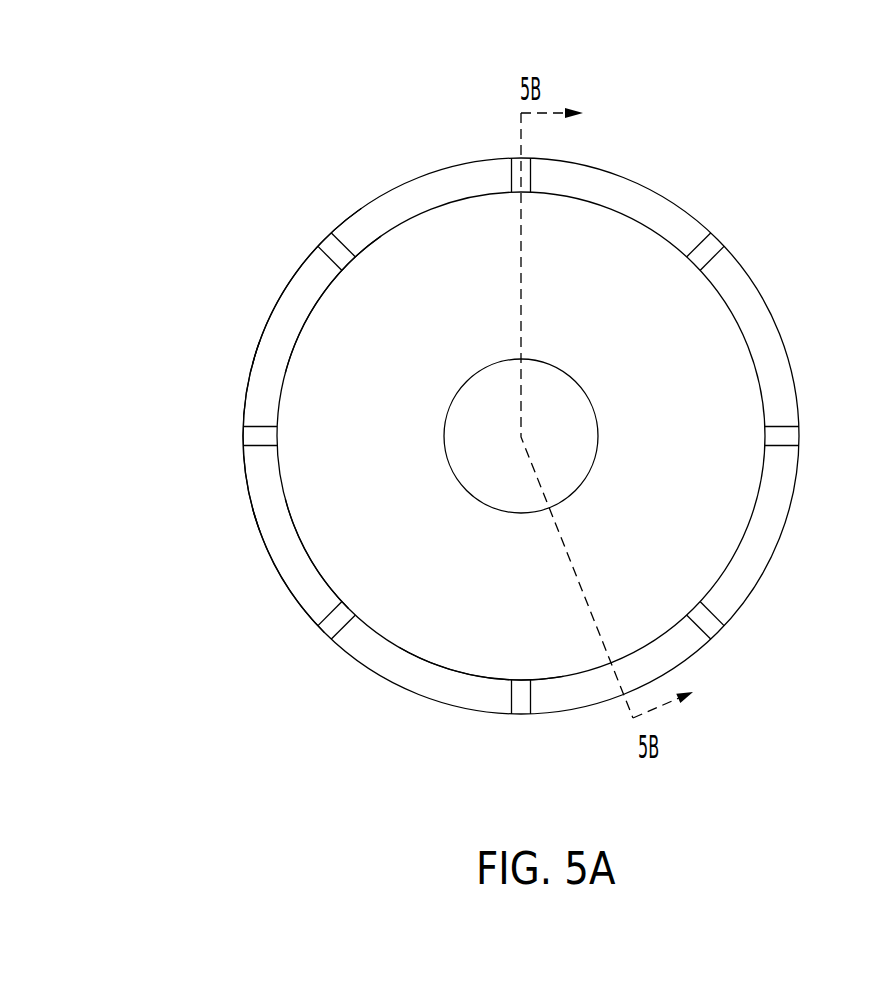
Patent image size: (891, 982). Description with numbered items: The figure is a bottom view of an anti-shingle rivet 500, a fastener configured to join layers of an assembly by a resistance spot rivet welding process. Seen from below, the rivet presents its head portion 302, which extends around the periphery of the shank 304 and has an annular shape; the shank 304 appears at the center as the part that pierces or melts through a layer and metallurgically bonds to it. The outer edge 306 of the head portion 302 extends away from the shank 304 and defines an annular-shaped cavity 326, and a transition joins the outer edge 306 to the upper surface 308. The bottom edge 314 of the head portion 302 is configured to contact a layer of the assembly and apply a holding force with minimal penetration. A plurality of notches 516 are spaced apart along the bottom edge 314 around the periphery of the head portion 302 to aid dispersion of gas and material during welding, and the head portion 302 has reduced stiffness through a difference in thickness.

The anti-shingle rivet 500 is at (392, 110).
The head portion 302 is at (305, 290).
The shank 304 is at (563, 432).
The outer edge 306 is at (243, 427).
The upper surface 308 is at (608, 253).
The bottom edge 314 is at (270, 530).
The annular-shaped cavity 326 is at (458, 607).
The notches 516 is at (512, 160).